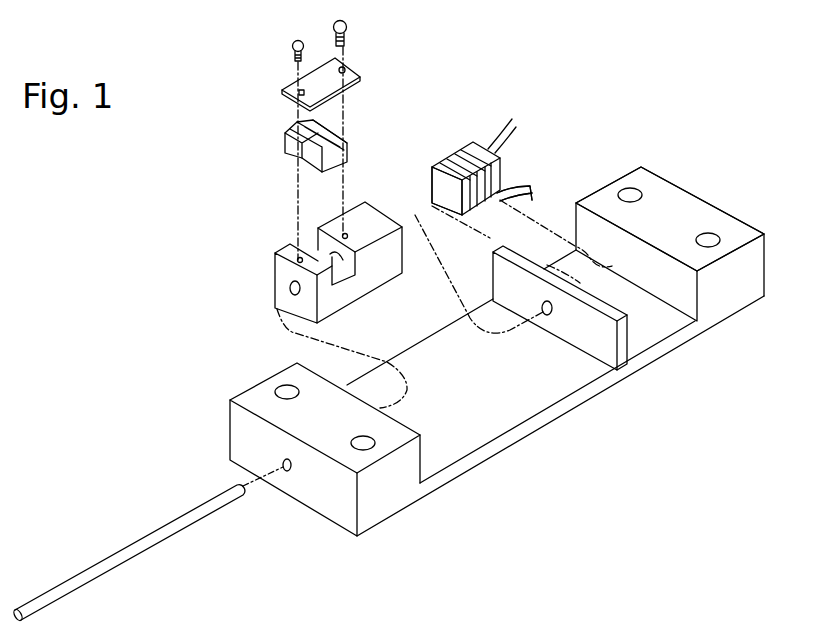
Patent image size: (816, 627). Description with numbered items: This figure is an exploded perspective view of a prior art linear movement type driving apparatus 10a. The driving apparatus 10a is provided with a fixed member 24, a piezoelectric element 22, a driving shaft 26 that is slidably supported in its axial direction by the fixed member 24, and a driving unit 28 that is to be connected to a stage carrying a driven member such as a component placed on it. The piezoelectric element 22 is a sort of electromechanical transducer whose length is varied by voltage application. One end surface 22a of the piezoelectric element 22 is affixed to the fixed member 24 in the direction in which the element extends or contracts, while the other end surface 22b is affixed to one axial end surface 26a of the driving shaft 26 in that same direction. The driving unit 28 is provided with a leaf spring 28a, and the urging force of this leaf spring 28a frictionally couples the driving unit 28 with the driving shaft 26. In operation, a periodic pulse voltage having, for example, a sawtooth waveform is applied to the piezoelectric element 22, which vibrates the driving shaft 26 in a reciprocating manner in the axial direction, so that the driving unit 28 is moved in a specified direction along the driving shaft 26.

The driving apparatus 10a is at (642, 123).
The piezoelectric element 22 is at (448, 161).
The one end surface 22a is at (507, 176).
The other end surface 22b is at (443, 187).
The fixed member 24 is at (593, 185).
The driving shaft 26 is at (143, 537).
The one axial end surface 26a is at (247, 497).
The driving unit 28 is at (270, 80).
The leaf spring 28a is at (314, 68).